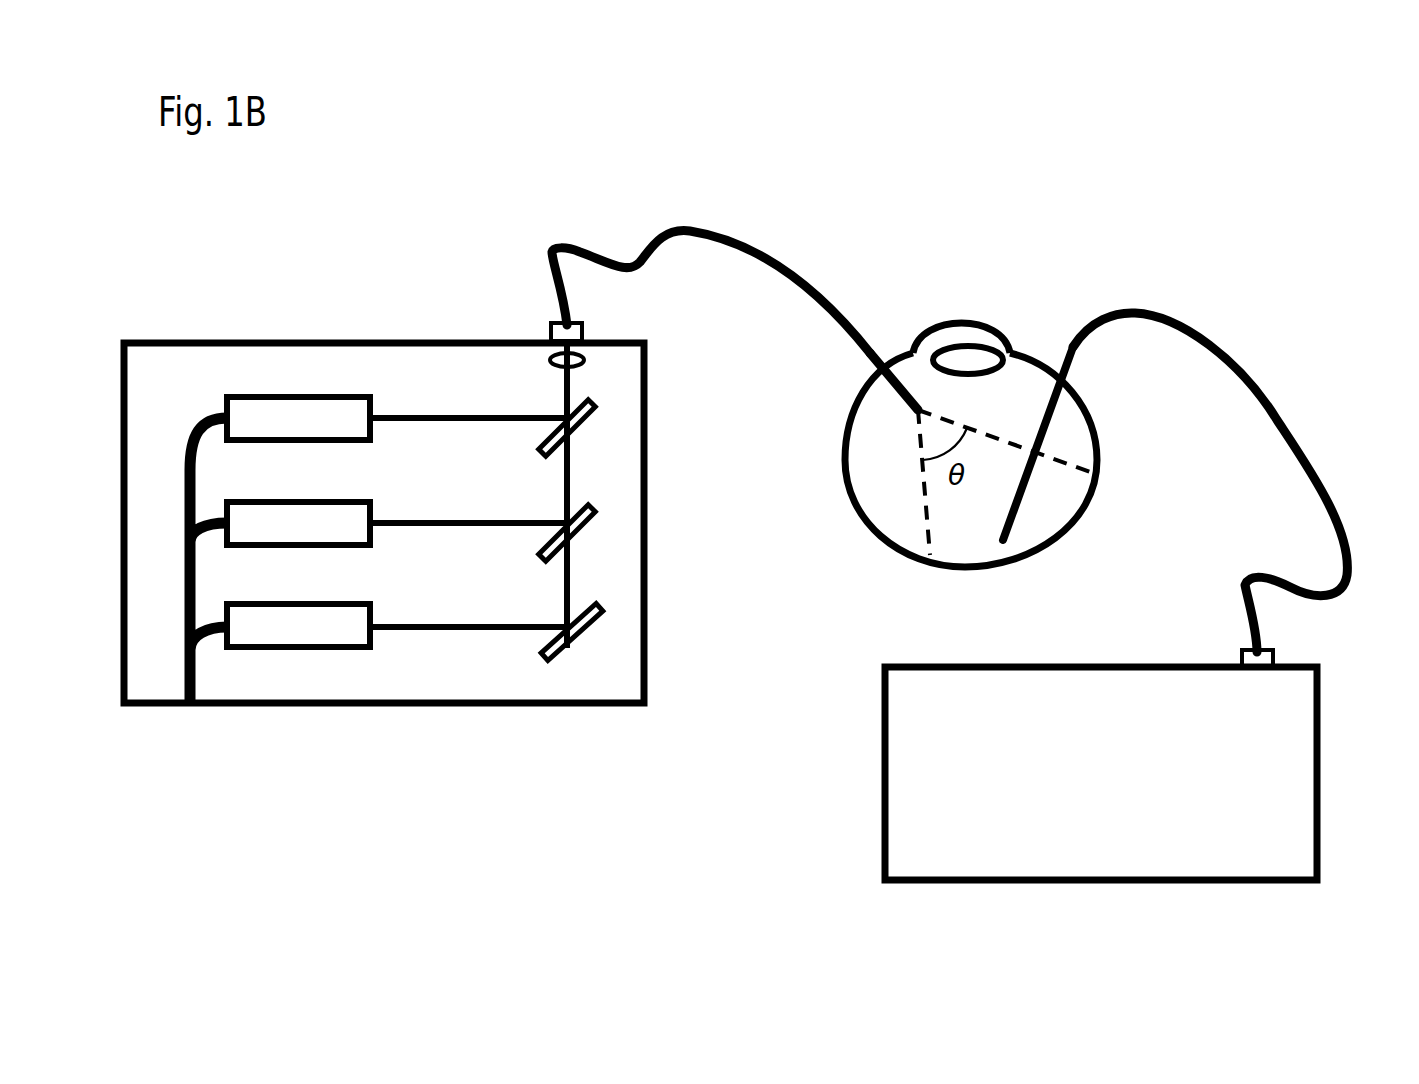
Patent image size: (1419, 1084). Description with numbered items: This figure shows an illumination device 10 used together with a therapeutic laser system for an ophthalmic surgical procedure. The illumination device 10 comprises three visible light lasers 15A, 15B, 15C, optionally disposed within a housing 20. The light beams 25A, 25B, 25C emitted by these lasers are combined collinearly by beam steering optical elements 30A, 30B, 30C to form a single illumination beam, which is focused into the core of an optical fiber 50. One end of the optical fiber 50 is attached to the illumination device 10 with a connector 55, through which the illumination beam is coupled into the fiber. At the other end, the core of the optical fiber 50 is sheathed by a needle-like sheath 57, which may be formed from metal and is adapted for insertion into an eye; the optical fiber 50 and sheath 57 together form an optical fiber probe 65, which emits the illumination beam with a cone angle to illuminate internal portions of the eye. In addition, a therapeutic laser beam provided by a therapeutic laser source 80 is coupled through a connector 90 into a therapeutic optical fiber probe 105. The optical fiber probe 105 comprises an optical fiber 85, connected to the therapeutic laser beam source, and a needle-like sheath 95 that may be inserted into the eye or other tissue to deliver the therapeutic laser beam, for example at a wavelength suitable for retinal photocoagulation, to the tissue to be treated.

The illumination device 10 is at (277, 306).
The visible light laser 15A is at (260, 395).
The visible light laser 15B is at (282, 500).
The visible light laser 15C is at (292, 600).
The housing 20 is at (647, 594).
The light beam 25A is at (430, 415).
The light beam 25B is at (450, 520).
The light beam 25C is at (450, 620).
The beam steering optical element 30A is at (582, 420).
The beam steering optical element 30B is at (582, 527).
The beam steering optical element 30C is at (573, 643).
The optical fiber 50 is at (687, 223).
The connector 55 is at (583, 332).
The needle-like sheath 57 is at (867, 353).
The optical fiber probe 65 is at (738, 273).
The therapeutic laser source 80 is at (880, 855).
The optical fiber 85 is at (1310, 445).
The connector 90 is at (1277, 658).
The needle-like sheath 95 is at (1045, 398).
The therapeutic optical fiber probe 105 is at (1081, 563).